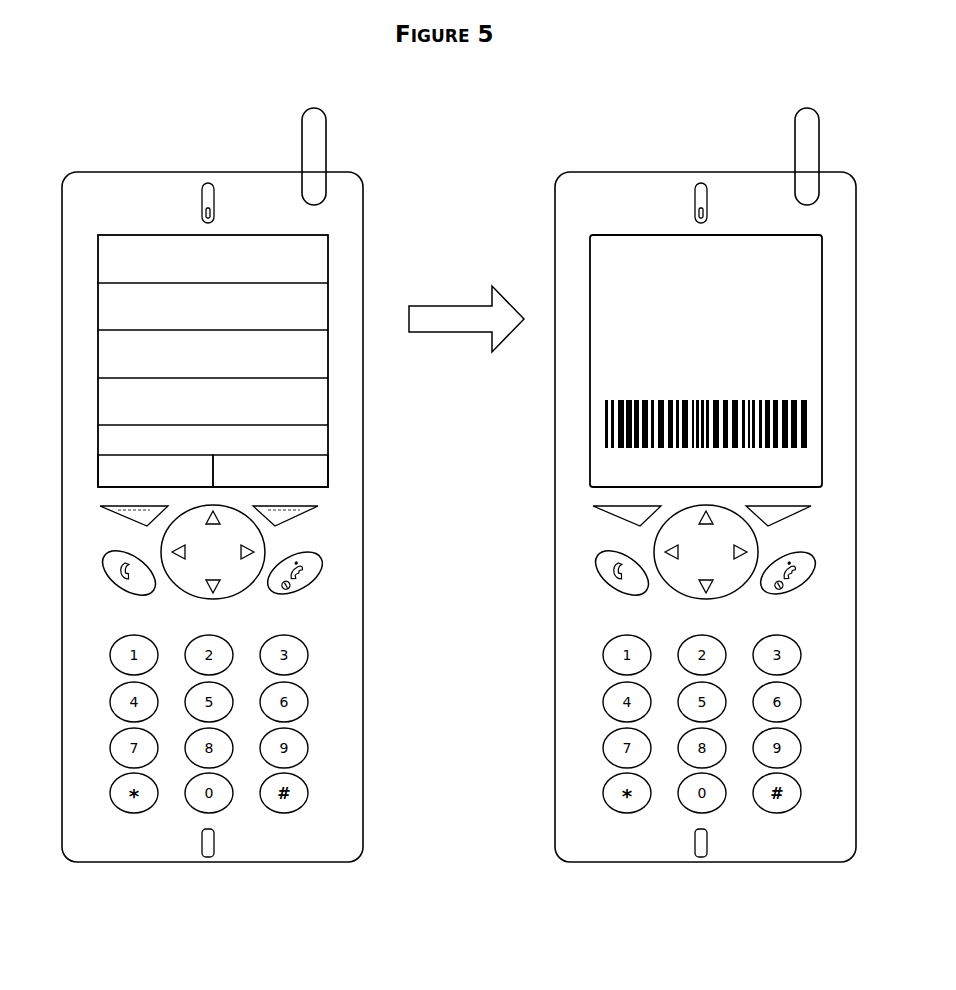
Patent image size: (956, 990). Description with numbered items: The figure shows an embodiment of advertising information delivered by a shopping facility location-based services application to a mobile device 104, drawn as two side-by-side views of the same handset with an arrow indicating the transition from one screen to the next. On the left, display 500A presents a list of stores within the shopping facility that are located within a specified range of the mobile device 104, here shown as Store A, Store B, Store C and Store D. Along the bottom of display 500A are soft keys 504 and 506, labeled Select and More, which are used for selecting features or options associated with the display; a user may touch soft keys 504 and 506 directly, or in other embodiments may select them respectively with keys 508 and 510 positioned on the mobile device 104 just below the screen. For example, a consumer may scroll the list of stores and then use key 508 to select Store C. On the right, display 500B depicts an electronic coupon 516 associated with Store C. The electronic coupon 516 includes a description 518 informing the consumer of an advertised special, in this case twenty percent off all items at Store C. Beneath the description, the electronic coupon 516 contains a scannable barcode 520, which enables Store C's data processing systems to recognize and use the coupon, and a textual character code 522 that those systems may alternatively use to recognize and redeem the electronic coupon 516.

The mobile device 104 is at (130, 172).
The display 500A is at (221, 329).
The display 500B is at (590, 233).
The soft key 504 is at (97, 470).
The soft key 506 is at (330, 473).
The key 508 is at (104, 507).
The key 510 is at (303, 514).
The electronic coupon 516 is at (661, 364).
The description 518 is at (693, 291).
The scannable barcode 520 is at (606, 396).
The textual character code 522 is at (622, 472).